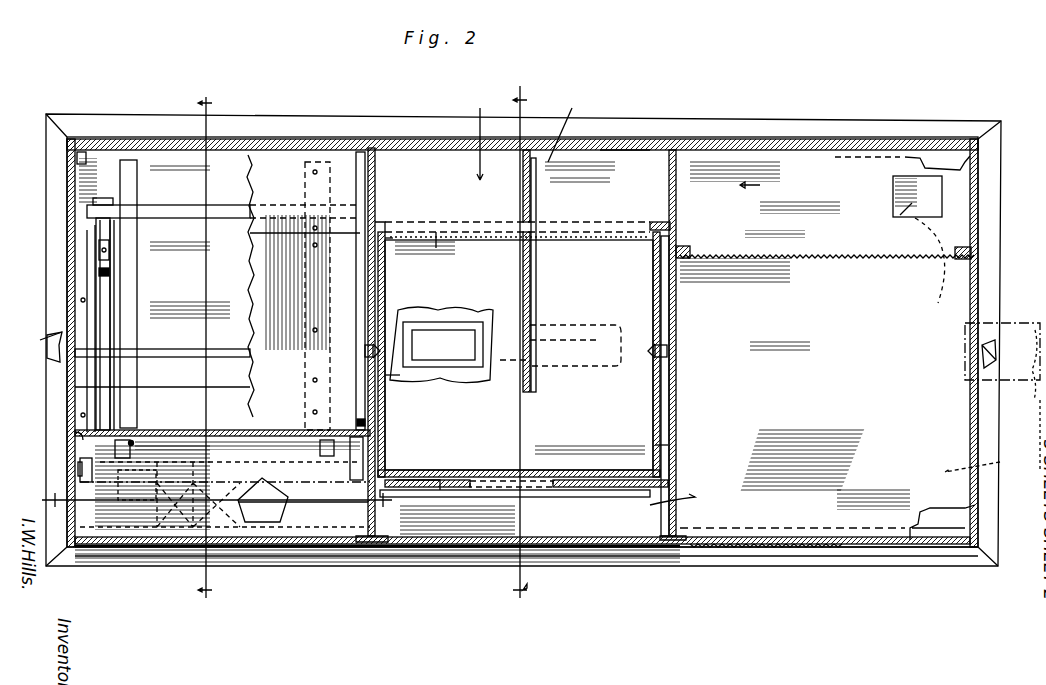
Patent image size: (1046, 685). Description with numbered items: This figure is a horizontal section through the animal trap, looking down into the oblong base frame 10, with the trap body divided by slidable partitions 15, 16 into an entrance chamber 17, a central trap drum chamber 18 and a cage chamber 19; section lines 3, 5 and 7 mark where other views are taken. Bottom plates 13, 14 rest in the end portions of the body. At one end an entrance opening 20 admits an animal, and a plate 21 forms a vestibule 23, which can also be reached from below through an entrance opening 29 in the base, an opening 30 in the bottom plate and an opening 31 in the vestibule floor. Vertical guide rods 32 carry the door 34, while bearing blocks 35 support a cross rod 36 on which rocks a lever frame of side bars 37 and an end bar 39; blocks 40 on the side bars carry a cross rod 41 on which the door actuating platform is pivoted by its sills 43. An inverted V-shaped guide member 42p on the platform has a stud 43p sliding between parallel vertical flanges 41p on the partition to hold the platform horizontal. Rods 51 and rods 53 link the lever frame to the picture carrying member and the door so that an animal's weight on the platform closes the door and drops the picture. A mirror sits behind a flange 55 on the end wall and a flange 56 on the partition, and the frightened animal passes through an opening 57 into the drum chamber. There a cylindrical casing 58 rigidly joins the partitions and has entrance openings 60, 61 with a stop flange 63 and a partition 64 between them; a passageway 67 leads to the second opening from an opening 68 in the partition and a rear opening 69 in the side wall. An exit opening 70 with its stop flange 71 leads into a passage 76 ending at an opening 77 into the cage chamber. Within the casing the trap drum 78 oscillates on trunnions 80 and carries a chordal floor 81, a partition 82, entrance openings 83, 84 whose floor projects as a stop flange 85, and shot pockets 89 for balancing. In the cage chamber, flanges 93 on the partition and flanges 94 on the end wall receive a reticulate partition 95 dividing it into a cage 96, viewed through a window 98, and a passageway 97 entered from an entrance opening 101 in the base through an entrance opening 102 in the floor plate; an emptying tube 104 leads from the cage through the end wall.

The section line 3- 3 is at (205, 349).
The section line 5- 5 is at (217, 500).
The section line 7- 7 is at (520, 341).
The base frame 10 is at (720, 556).
The bottom plate 13 is at (165, 294).
The bottom plate 14 is at (775, 256).
The partition 15 is at (368, 427).
The partition 16 is at (670, 400).
The entrance chamber 17 is at (68, 190).
The trap drum chamber 18 is at (445, 148).
The cage chamber 19 is at (1010, 410).
The entrance opening 20 is at (255, 545).
The plate 21 is at (72, 428).
The vestibule 23 is at (96, 518).
The entrance opening 29 is at (48, 360).
The opening 30 is at (180, 560).
The opening 31 is at (287, 532).
The vertical guide rods 32 is at (132, 442).
The door 34 is at (182, 442).
The bearing blocks 35 is at (78, 312).
The cross rod 36 is at (172, 352).
The side bars 37 is at (96, 225).
The end bar 39 is at (192, 218).
The blocks 40 is at (106, 275).
The cross rod 41 is at (190, 300).
The parallel vertical flanges 41p is at (342, 320).
The inverted V-shaped guide member 42p is at (404, 376).
The sills 43 is at (138, 330).
The stud 43p is at (432, 300).
The rods 51 is at (366, 458).
The rods 53 is at (324, 440).
The flange 55 is at (80, 160).
The flange 56 is at (360, 165).
The opening 57 is at (378, 179).
The cylindrical casing 58 is at (625, 488).
The entrance opening 60 is at (388, 230).
The entrance opening 61 is at (652, 222).
The stop flange 63 is at (483, 135).
The partition 64 is at (578, 183).
The passageway 67 is at (569, 126).
The opening 68 is at (676, 213).
The opening 69 is at (625, 119).
The exit opening 70 is at (572, 502).
The stop flange 71 is at (540, 470).
The passage 76 is at (465, 518).
The opening 77 is at (677, 505).
The trap drum 78 is at (668, 445).
The trunnions 80 is at (362, 352).
The floor 81 is at (519, 349).
The partition 82 is at (538, 312).
The entrance opening 83 is at (392, 245).
The entrance opening 84 is at (648, 244).
The stop flange 85 is at (445, 250).
The shot pockets 89 is at (443, 344).
The vertical flanges 93 is at (690, 250).
The flanges 94 is at (958, 258).
The reticulate partition 95 is at (812, 262).
The cage 96 is at (945, 465).
The passageway 97 is at (800, 168).
The window 98 is at (787, 550).
The entrance opening 101 is at (996, 348).
The entrance opening 102 is at (902, 176).
The emptying tube 104 is at (992, 401).